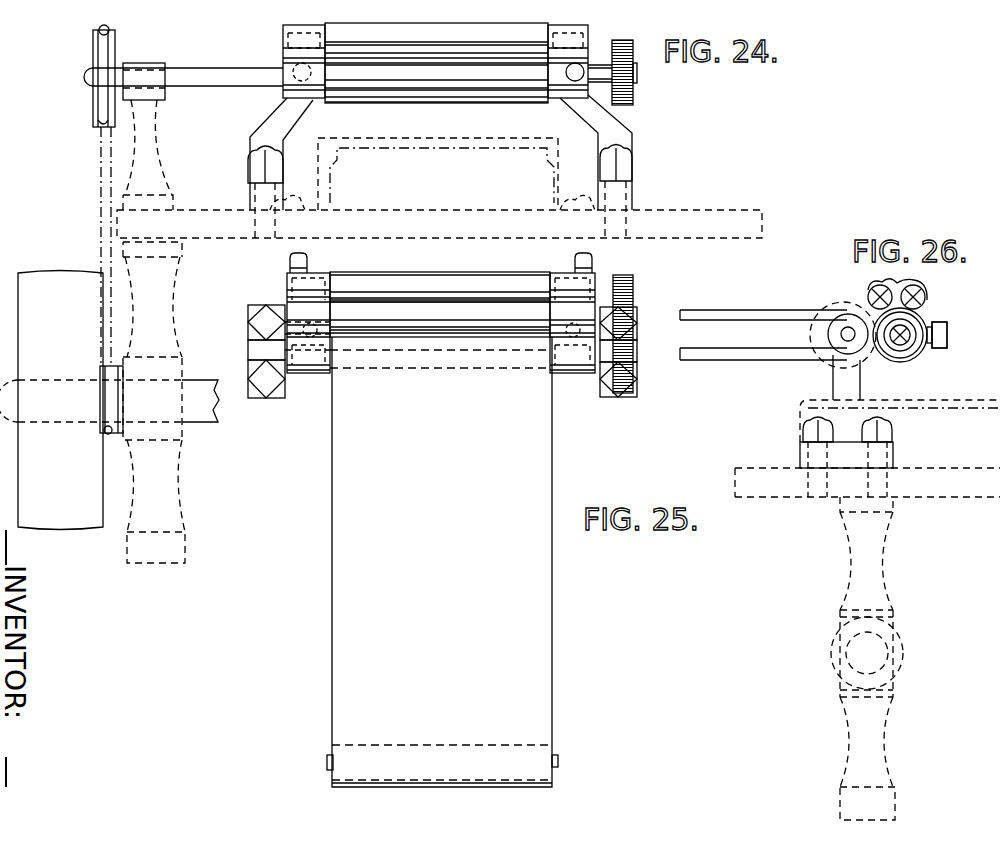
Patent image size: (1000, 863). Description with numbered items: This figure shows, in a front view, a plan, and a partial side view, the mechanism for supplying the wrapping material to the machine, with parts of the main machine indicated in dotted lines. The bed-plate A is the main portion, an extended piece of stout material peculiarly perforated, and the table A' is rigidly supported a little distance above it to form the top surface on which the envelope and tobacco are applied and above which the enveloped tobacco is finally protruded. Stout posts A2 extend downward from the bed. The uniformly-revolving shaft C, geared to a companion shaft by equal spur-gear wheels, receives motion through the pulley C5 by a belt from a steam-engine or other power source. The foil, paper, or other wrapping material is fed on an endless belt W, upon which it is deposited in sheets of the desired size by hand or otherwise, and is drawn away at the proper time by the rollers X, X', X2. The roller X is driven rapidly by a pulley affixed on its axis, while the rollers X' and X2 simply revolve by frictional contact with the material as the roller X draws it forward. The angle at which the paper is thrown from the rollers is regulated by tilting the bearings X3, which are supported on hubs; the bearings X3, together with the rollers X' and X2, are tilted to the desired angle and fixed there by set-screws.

In FIG. 24, the roller X' is at (436, 63).
In FIG. 25, the roller X' is at (493, 288).
In FIG. 26, the roller X' is at (900, 335).
In FIG. 24, the roller X is at (612, 72).
In FIG. 25, the roller X is at (494, 336).
In FIG. 26, the roller X is at (910, 332).
In FIG. 24, the roller X2 is at (438, 72).
In FIG. 25, the roller X2 is at (462, 306).
In FIG. 26, the roller X2 is at (901, 294).
In FIG. 24, the bearings X3 is at (424, 61).
In FIG. 25, the bearings X3 is at (432, 313).
In FIG. 26, the bearings X3 is at (948, 335).
In FIG. 24, the bed-plate A is at (439, 224).
In FIG. 26, the bed-plate A is at (867, 482).
In FIG. 24, the table A' is at (432, 168).
In FIG. 26, the table A' is at (900, 426).
In FIG. 24, the posts A2 is at (154, 331).
In FIG. 26, the posts A2 is at (867, 658).
In FIG. 24, the shaft C is at (118, 400).
In FIG. 24, the pulley C5 is at (51, 400).
In FIG. 25, the endless belt W is at (442, 562).
In FIG. 26, the endless belt W is at (763, 327).